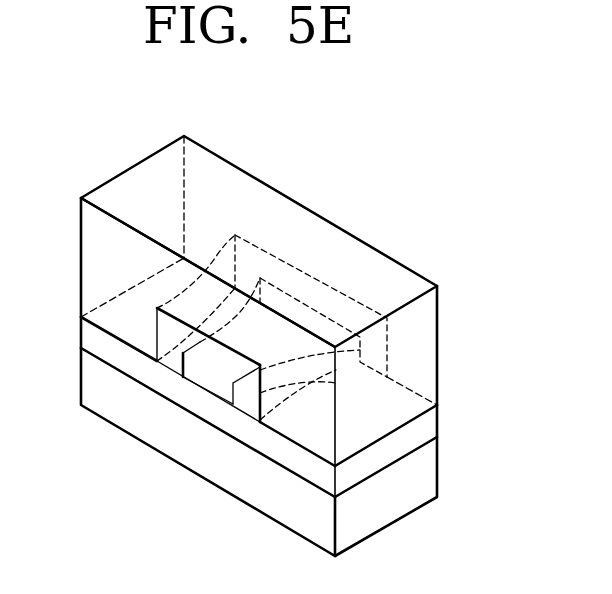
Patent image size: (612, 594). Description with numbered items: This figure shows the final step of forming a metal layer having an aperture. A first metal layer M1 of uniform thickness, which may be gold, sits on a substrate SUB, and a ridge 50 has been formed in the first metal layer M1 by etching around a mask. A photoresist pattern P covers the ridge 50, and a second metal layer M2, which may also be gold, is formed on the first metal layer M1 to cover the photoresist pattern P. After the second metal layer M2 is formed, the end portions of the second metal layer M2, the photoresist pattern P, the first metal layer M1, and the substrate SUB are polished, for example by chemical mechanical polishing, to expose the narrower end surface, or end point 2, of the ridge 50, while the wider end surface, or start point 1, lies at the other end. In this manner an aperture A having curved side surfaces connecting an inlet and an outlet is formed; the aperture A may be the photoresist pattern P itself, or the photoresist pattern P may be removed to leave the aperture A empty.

The second metal layer M2 is at (430, 350).
The first metal layer M1 is at (430, 425).
The substrate SUB is at (430, 467).
The aperture A is at (170, 330).
The end point 2 is at (209, 380).
The photoresist pattern P is at (312, 290).
The ridge 50 is at (278, 302).
The start point 1 is at (339, 315).